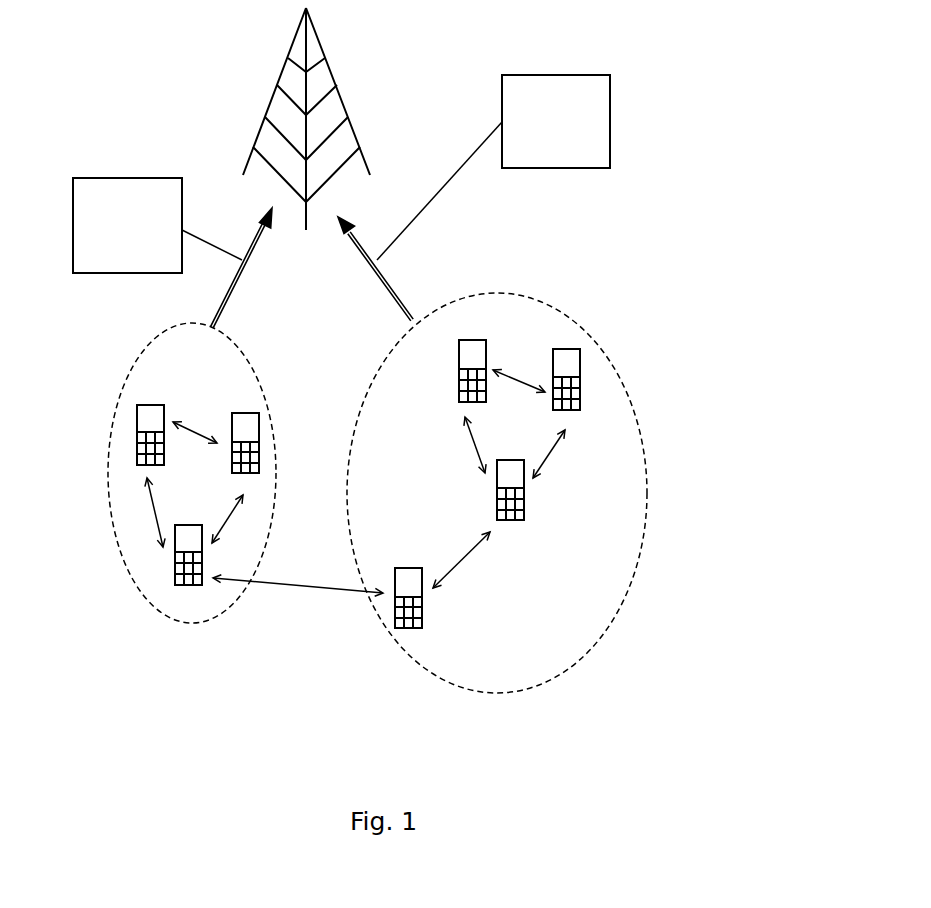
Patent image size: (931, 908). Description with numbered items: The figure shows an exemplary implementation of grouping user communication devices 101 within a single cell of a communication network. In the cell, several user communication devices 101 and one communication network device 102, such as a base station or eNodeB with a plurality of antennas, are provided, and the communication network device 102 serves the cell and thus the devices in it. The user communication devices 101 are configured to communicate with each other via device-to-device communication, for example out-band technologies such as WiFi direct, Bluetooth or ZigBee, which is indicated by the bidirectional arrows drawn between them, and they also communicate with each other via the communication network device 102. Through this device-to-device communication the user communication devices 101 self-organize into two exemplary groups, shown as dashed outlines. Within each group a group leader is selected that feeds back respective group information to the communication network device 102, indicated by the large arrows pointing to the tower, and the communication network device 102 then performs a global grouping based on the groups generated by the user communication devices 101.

The user communication device 101 is at (137, 435).
The communication network device 102 is at (340, 90).